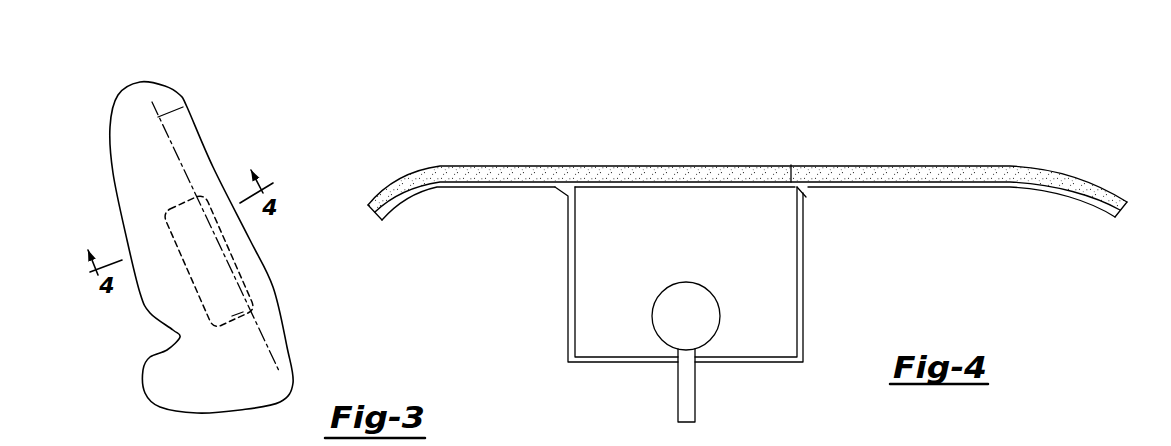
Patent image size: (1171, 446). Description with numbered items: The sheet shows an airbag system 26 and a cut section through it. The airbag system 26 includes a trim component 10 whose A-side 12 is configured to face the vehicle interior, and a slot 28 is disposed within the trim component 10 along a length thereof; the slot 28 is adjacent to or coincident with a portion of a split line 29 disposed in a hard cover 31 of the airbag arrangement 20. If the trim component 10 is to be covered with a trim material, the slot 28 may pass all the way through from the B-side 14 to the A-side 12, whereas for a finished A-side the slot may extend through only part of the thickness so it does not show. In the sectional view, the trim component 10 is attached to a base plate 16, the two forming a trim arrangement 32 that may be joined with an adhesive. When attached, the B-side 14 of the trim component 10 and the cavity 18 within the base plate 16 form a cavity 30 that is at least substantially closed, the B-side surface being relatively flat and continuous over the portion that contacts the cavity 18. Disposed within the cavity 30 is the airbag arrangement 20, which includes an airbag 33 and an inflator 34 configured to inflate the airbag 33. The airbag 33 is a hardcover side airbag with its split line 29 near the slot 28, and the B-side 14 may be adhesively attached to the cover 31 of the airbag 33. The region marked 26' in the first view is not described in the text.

In FIG. 3, the trim component 10 is at (195, 246).
In FIG. 4, the trim component 10 is at (747, 177).
In FIG. 3, the A-side 12 is at (123, 130).
In FIG. 4, the A-side 12 is at (910, 165).
In FIG. 4, the B-side 14 is at (458, 188).
In FIG. 4, the base plate 16 is at (1080, 204).
In FIG. 3, the cavity 18 is at (242, 263).
In FIG. 4, the cavity 18 is at (570, 178).
In FIG. 3, the airbag arrangement 20 is at (252, 290).
In FIG. 4, the airbag arrangement 20 is at (683, 272).
In FIG. 3, the airbag system 26 is at (216, 210).
In FIG. 4, the airbag system 26 is at (698, 116).
In FIG. 3, the second panel portion 26' is at (250, 436).
In FIG. 3, the slot 28 is at (180, 108).
In FIG. 4, the slot 28 is at (793, 165).
In FIG. 3, the split line 29 is at (240, 320).
In FIG. 4, the split line 29 is at (791, 182).
In FIG. 4, the cavity 30 is at (810, 198).
In FIG. 4, the hard cover 31 is at (612, 189).
In FIG. 3, the trim arrangement 32 is at (108, 201).
In FIG. 4, the trim arrangement 32 is at (437, 150).
In FIG. 4, the airbag 33 is at (597, 290).
In FIG. 4, the inflator 34 is at (650, 316).